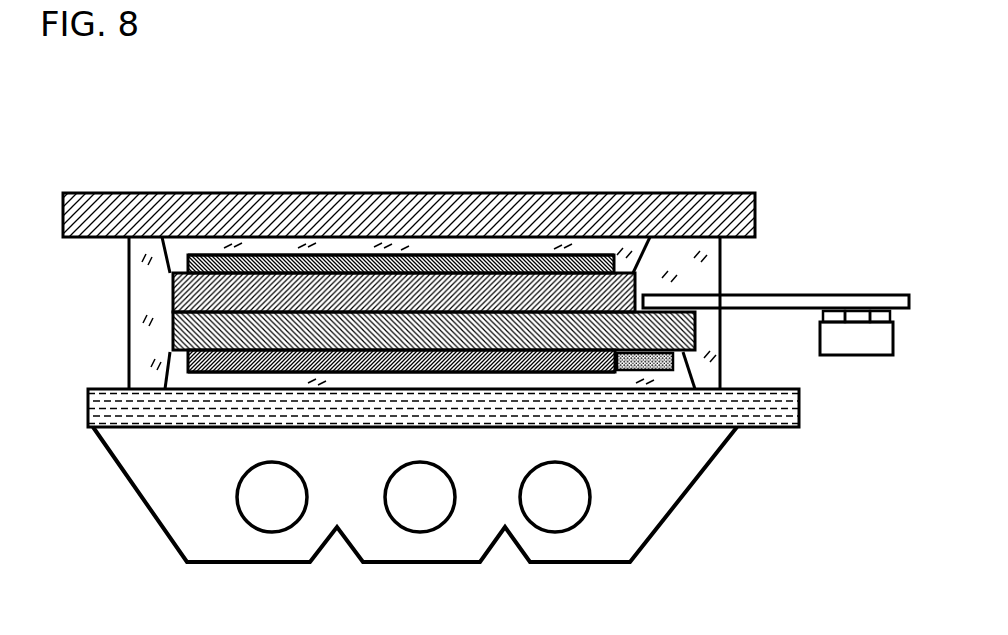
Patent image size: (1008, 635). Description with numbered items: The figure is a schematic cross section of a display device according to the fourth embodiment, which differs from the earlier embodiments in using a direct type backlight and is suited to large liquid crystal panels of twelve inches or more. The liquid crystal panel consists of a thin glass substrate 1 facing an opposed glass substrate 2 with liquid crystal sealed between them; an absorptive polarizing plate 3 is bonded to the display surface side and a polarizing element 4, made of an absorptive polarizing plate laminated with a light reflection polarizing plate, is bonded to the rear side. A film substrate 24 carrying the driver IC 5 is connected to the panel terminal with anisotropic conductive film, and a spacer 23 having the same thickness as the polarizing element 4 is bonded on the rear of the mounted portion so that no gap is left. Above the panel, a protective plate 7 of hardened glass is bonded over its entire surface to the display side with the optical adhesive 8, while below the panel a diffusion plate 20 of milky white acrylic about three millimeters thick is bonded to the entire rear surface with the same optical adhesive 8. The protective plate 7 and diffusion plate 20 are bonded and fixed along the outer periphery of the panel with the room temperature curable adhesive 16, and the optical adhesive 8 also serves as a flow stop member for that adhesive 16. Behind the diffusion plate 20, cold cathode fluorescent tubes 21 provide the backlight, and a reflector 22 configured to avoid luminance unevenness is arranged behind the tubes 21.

The glass substrate 1 is at (404, 196).
The opposed glass substrate 2 is at (434, 220).
The absorptive polarizing plate 3 is at (401, 179).
The polarizing element 4 is at (454, 451).
The driver IC 5 is at (856, 402).
The protective plate 7 is at (409, 169).
The optical adhesive 8 is at (340, 234).
The adhesive 16 is at (424, 243).
The diffusion plate 20 is at (463, 448).
The cold cathode fluorescent tube 21 is at (466, 519).
The reflector 22 is at (409, 511).
The spacer 23 is at (705, 451).
The film substrate 24 is at (776, 211).